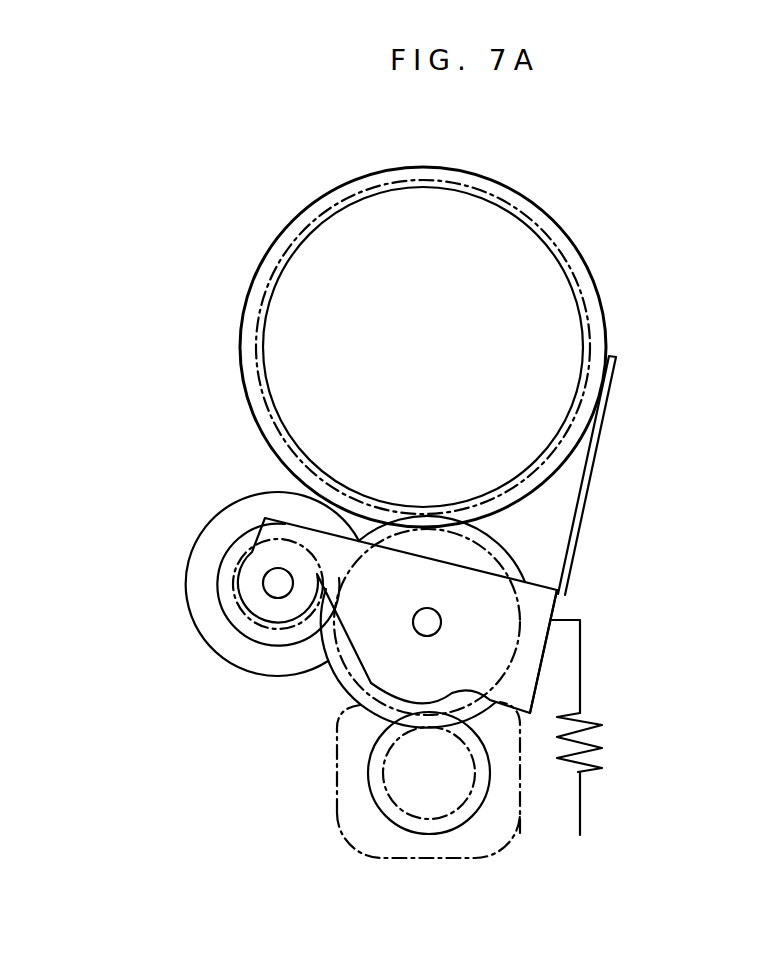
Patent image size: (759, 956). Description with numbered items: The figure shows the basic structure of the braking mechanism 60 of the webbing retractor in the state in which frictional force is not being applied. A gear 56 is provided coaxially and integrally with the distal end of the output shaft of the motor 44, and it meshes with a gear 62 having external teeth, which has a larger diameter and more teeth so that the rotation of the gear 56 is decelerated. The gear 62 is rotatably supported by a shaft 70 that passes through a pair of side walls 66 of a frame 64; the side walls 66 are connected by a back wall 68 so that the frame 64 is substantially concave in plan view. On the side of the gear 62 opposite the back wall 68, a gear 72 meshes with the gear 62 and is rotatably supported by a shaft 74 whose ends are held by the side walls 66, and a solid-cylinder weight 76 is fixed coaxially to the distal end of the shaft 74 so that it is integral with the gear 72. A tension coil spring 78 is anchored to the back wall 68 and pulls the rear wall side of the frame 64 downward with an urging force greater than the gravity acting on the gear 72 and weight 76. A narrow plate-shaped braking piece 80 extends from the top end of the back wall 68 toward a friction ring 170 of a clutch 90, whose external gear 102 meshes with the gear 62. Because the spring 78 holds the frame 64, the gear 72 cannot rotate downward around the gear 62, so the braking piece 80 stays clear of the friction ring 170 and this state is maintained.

The clutch 90 is at (620, 189).
The external gear 102 is at (540, 198).
The friction ring 170 is at (578, 242).
The braking piece 80 is at (598, 449).
The braking mechanism 60 is at (615, 523).
The frame 64 is at (580, 568).
The side walls 66 is at (548, 603).
The back wall 68 is at (541, 670).
The tension coil spring 78 is at (582, 772).
The shaft 70 is at (433, 623).
The gear 62 is at (337, 684).
The weight 76 is at (220, 512).
The gear 72 is at (216, 594).
The shaft 74 is at (278, 590).
The motor 44 is at (335, 767).
The gear 56 is at (368, 783).